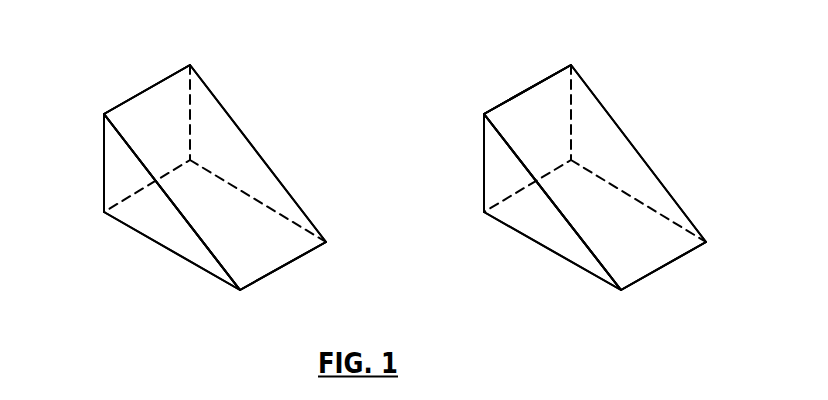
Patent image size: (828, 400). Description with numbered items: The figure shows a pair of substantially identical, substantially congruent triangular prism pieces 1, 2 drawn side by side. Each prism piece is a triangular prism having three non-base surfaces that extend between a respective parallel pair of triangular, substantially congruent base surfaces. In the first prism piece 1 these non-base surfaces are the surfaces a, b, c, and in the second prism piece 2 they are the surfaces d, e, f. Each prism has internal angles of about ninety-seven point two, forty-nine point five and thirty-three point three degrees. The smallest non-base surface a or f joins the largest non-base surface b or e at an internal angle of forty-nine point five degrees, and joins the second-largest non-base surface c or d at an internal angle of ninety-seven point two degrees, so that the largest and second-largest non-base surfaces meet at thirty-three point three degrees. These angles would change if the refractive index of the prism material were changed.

The triangular prism piece 1 is at (595, 168).
The triangular prism piece 2 is at (186, 162).
The smallest non-base surface a is at (547, 105).
The largest non-base surface b is at (592, 124).
The second-largest non-base surface c is at (641, 252).
The second-largest non-base surface d is at (253, 255).
The largest non-base surface e is at (168, 130).
The smallest non-base surface f is at (122, 182).